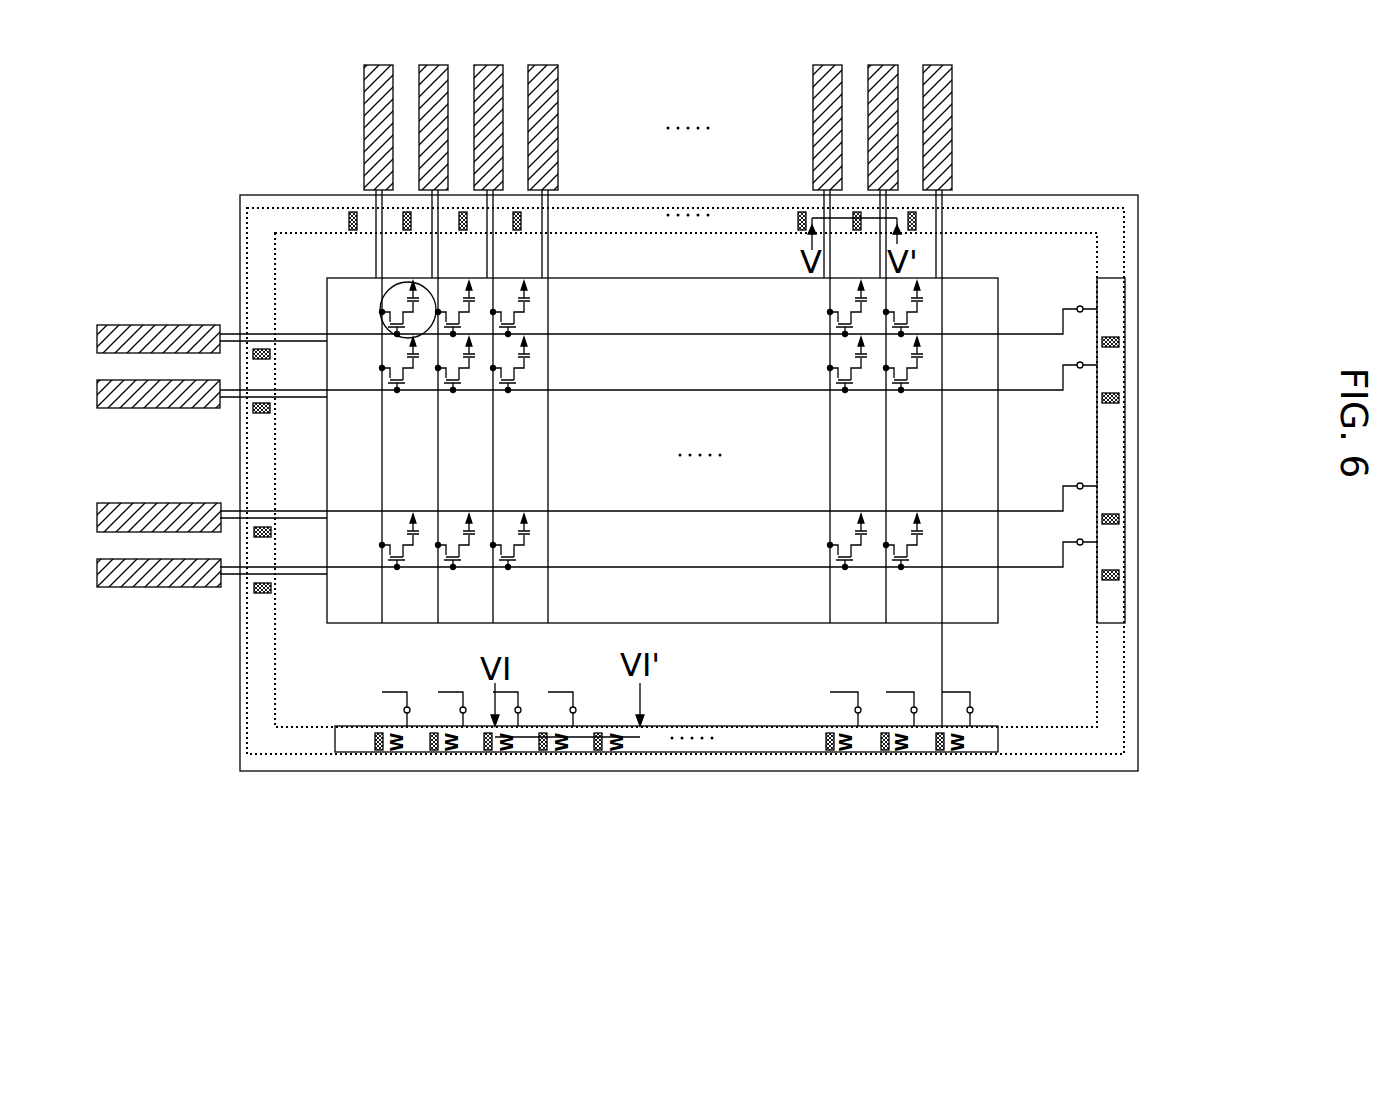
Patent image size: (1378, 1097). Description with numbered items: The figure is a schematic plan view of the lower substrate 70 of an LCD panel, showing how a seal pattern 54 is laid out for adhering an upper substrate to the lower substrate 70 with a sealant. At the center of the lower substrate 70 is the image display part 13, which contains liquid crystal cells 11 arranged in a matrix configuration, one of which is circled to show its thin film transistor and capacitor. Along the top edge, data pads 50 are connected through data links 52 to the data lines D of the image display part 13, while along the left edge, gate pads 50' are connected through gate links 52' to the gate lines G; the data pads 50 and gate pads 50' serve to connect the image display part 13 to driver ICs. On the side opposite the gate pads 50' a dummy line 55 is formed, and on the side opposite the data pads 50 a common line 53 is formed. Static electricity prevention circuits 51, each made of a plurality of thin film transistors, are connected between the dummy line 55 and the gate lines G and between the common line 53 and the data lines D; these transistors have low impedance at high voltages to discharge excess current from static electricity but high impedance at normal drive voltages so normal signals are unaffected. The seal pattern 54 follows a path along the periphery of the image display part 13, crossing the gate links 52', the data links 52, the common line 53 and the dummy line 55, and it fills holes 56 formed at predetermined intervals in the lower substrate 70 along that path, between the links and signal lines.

The liquid crystal cell 11 is at (384, 317).
The image display part 13 is at (963, 278).
The data pad 50 is at (607, 127).
The gate pad 50' is at (138, 402).
The static electricity prevention circuit 51 is at (410, 706).
The data link 52 is at (656, 380).
The gate link 52' is at (257, 454).
The common line 53 is at (690, 773).
The seal pattern 54 is at (238, 677).
The dummy line 55 is at (1140, 587).
The hole 56 is at (349, 221).
The lower substrate 70 is at (735, 195).
The data line D is at (943, 302).
The gate line G is at (980, 334).